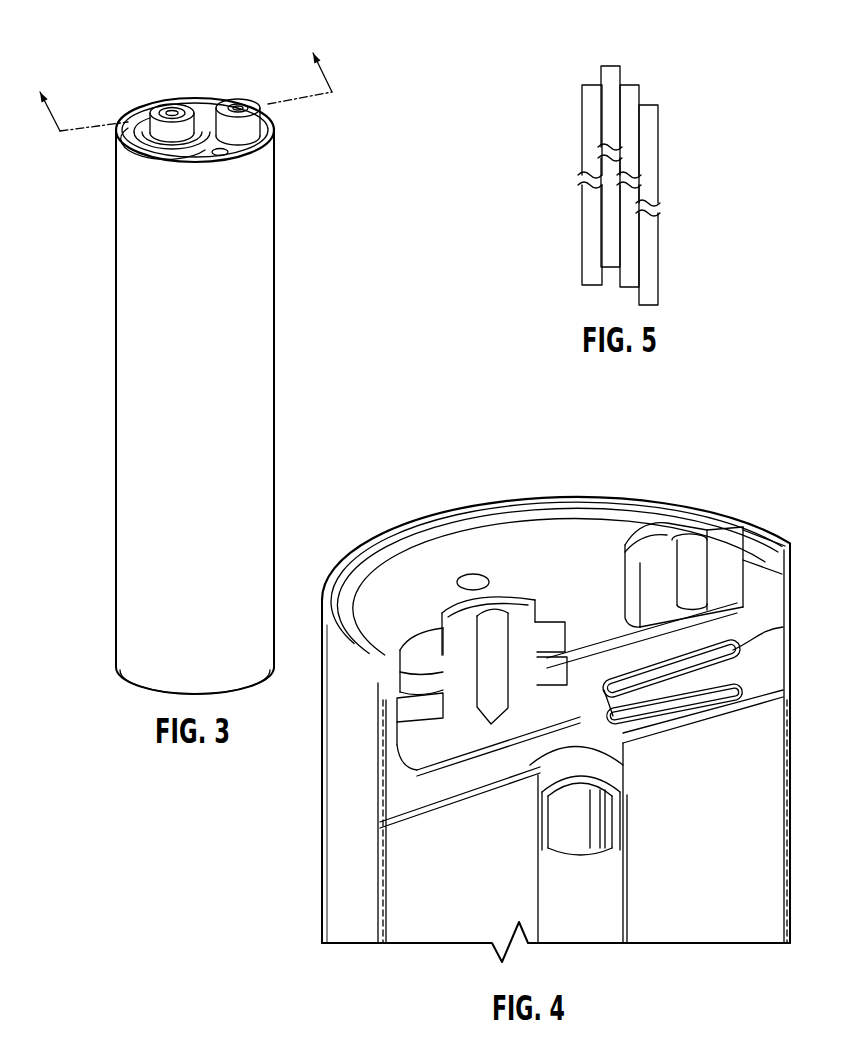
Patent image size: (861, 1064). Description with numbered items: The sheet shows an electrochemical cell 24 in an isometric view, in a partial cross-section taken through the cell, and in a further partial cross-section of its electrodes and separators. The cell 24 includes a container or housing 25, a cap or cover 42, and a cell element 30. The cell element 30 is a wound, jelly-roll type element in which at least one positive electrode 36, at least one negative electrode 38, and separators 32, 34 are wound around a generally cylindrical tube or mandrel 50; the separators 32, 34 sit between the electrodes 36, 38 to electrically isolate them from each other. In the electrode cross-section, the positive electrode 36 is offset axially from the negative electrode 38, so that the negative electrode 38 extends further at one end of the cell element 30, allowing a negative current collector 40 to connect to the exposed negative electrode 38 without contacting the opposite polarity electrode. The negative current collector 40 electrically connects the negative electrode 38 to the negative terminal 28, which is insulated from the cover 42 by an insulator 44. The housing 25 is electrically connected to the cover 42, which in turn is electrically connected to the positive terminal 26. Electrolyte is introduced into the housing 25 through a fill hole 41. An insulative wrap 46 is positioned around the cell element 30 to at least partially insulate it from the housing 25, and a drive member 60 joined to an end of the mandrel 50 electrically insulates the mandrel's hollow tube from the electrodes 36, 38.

In FIG. 3, the cell 24 is at (306, 280).
In FIG. 4, the cell 24 is at (546, 480).
In FIG. 3, the housing 25 is at (268, 410).
In FIG. 4, the housing 25 is at (348, 815).
In FIG. 3, the positive terminal 26 is at (222, 108).
In FIG. 4, the positive terminal 26 is at (703, 523).
In FIG. 3, the negative terminal 28 is at (158, 110).
In FIG. 4, the negative terminal 28 is at (452, 610).
In FIG. 4, the cell element 30 is at (412, 913).
In FIG. 5, the separator 32 is at (587, 100).
In FIG. 5, the separator 34 is at (627, 90).
In FIG. 5, the positive electrode 36 is at (652, 107).
In FIG. 5, the negative electrode 38 is at (611, 70).
In FIG. 4, the negative current collector 40 is at (790, 623).
In FIG. 3, the fill hole 41 is at (220, 152).
In FIG. 4, the fill hole 41 is at (473, 578).
In FIG. 4, the cover 42 is at (568, 560).
In FIG. 4, the insulator 44 is at (388, 738).
In FIG. 4, the insulative wrap 46 is at (380, 876).
In FIG. 4, the mandrel 50 is at (608, 902).
In FIG. 4, the drive member 60 is at (617, 798).